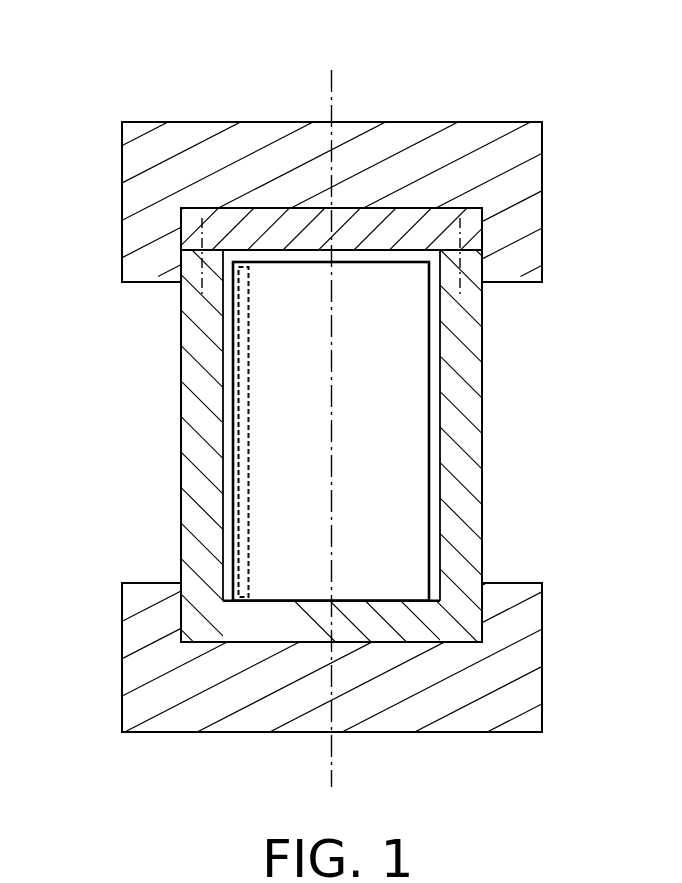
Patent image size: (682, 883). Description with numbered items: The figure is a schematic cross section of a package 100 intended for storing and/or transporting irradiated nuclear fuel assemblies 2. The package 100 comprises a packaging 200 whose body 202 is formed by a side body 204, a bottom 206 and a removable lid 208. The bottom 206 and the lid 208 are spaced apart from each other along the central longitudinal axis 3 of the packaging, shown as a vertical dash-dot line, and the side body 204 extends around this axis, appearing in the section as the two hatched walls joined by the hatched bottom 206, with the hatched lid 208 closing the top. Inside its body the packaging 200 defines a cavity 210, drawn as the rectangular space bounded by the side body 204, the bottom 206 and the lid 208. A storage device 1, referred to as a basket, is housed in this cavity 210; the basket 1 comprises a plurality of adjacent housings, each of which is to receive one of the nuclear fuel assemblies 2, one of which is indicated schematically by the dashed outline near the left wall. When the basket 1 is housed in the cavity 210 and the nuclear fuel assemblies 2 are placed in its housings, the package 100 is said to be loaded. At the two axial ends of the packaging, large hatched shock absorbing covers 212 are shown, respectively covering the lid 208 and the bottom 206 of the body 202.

The package 100 is at (545, 85).
The packaging 200 is at (545, 172).
The body 202 is at (485, 405).
The side body 204 is at (458, 473).
The bottom 206 is at (282, 617).
The removable lid 208 is at (227, 223).
The cavity 210 is at (427, 386).
The shock absorbing covers 212 is at (178, 135).
The storage device 1 is at (412, 327).
The irradiated nuclear fuel assemblies 2 is at (241, 428).
The central longitudinal axis 3 is at (332, 78).